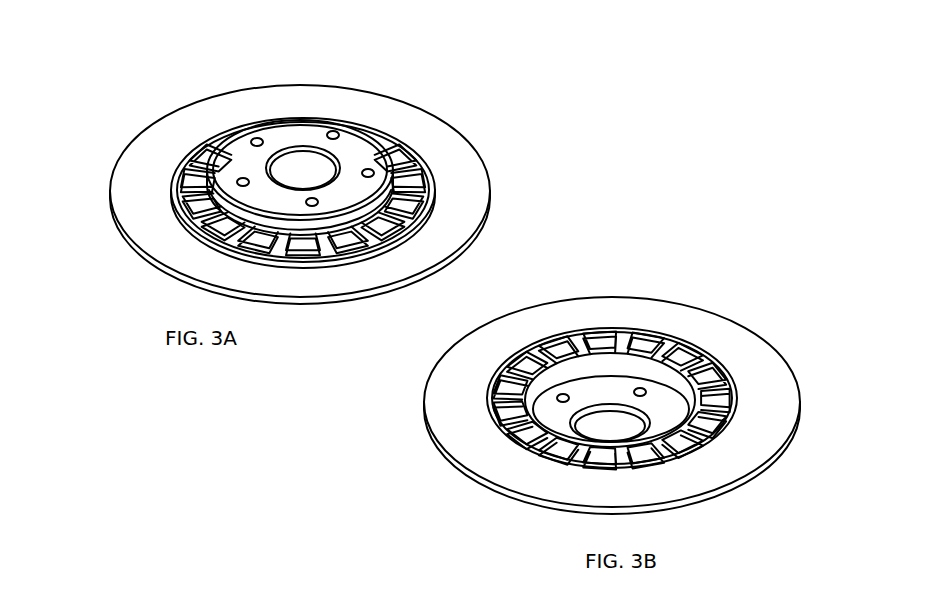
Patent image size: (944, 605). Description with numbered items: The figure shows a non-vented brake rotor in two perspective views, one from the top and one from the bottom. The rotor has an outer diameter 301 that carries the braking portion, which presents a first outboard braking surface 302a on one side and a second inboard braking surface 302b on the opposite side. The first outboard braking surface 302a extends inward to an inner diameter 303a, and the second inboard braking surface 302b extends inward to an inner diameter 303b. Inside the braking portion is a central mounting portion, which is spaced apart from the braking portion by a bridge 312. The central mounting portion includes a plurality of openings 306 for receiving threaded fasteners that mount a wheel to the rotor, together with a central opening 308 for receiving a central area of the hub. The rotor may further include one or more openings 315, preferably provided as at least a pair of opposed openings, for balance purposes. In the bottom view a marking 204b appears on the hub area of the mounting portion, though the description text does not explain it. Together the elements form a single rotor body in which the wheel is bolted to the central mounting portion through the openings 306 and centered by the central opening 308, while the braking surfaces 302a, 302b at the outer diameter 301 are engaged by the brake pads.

In FIG. 3A, the outer diameter 301 is at (425, 110).
In FIG. 3B, the outer diameter 301 is at (665, 295).
In FIG. 3A, the first outboard braking surface 302a is at (163, 137).
In FIG. 3B, the second inboard braking surface 302b is at (578, 305).
In FIG. 3A, the inner diameter 303a is at (180, 215).
In FIG. 3B, the inner diameter 303b is at (733, 390).
In FIG. 3A, the openings 306 is at (333, 131).
In FIG. 3A, the central opening 308 is at (250, 170).
In FIG. 3A, the bridge 312 is at (417, 167).
In FIG. 3B, the bridge 312 is at (537, 453).
In FIG. 3A, the openings 315 is at (322, 257).
In FIG. 3B, the openings 315 is at (685, 358).
In FIG. 3B, the hub marking 204b is at (604, 398).